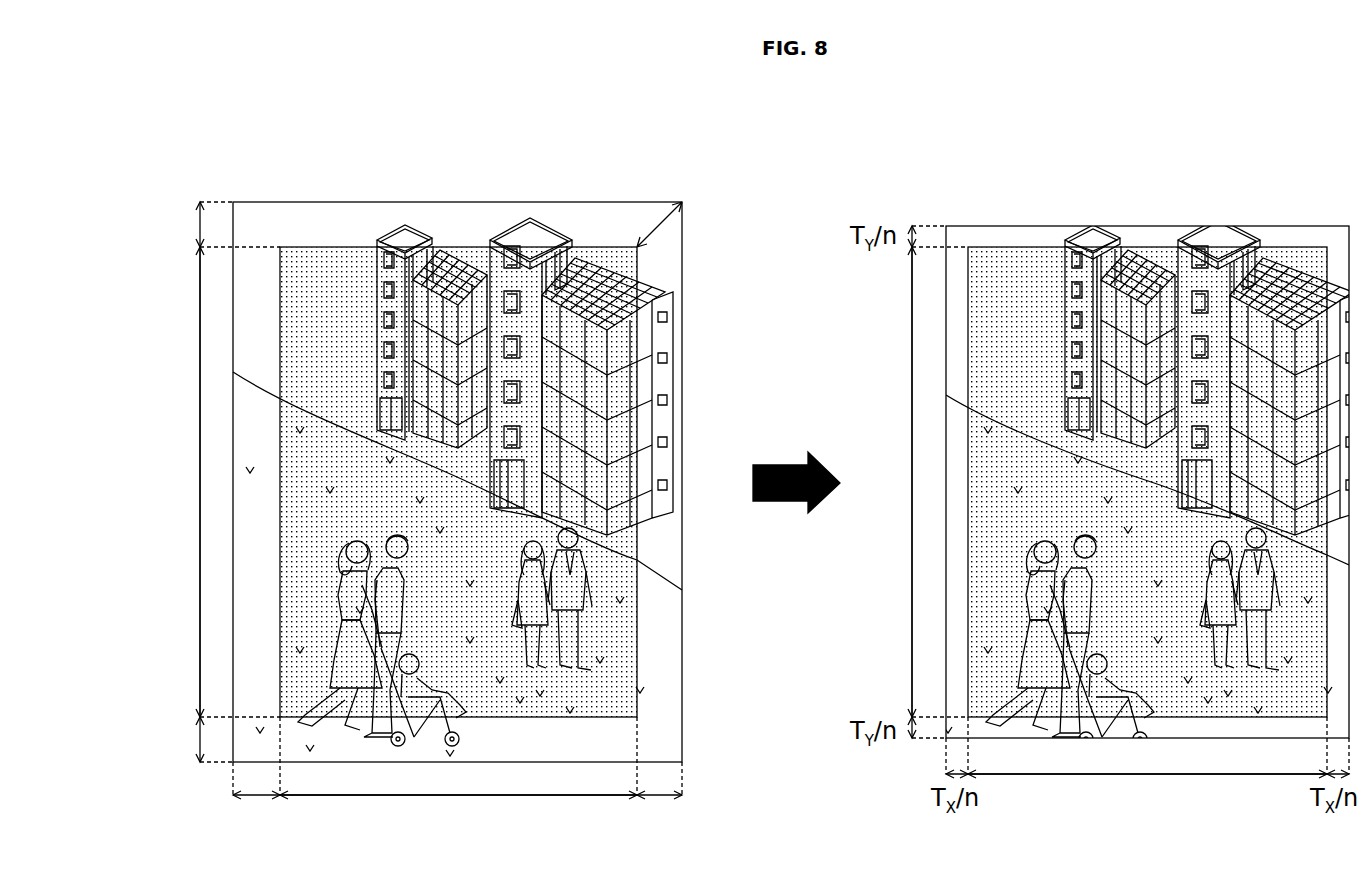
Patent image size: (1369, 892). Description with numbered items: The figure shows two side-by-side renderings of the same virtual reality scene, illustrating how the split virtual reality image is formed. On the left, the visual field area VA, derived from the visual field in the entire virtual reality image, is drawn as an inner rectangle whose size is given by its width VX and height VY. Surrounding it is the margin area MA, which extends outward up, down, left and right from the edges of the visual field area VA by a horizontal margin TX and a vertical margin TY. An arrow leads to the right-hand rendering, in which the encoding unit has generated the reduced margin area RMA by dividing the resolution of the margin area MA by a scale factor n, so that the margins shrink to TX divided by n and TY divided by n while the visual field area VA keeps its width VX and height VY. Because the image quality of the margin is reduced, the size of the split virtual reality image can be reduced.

The visual field area VA is at (327, 272).
The margin area MA is at (652, 215).
The reduced margin area RMA is at (1153, 237).
The horizontal margin TX is at (457, 779).
The vertical margin TY is at (222, 482).
The visual field area width VX is at (803, 807).
The visual field area height VY is at (538, 482).